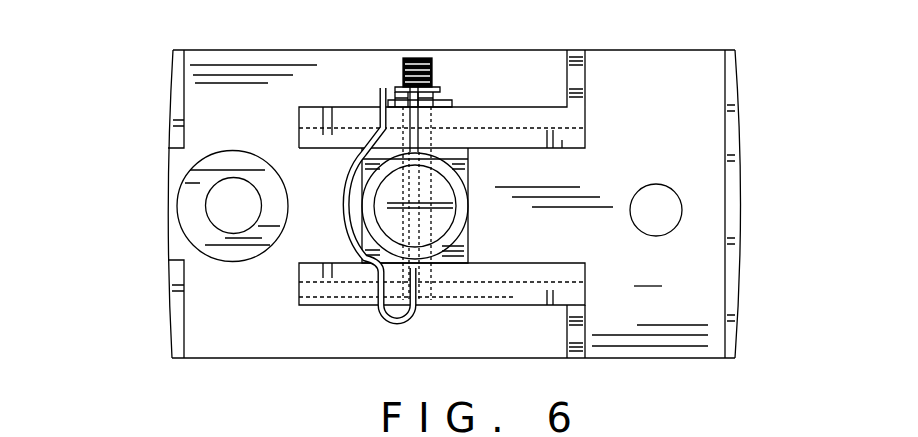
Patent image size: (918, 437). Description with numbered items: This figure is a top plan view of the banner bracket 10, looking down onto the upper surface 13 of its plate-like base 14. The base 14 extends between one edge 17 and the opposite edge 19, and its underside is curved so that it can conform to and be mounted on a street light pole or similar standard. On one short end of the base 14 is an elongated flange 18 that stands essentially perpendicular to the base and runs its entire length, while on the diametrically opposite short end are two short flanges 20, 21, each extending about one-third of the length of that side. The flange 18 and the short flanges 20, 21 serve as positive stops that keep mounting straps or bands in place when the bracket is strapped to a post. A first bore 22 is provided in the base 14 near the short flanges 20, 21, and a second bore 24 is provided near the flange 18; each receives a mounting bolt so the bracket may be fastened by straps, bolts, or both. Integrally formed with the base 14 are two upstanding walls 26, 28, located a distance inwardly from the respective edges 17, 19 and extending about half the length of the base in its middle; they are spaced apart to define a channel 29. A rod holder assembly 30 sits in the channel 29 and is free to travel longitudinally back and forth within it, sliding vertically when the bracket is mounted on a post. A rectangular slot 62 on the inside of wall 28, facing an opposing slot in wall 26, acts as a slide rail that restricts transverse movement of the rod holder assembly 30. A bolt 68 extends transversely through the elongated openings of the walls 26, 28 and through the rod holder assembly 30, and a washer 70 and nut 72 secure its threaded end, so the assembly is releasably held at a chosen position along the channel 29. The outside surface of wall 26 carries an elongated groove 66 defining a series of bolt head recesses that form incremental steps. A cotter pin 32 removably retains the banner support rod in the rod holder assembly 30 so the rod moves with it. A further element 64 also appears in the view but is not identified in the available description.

The banner bracket 10 is at (118, 150).
The upper surface 13 is at (648, 275).
The base 14 is at (471, 208).
The edge 17 is at (323, 360).
The elongated flange 18 is at (732, 257).
The edge 19 is at (325, 50).
The short flange 20 is at (176, 306).
The short flange 21 is at (177, 108).
The first bore 22 is at (222, 203).
The second bore 24 is at (657, 213).
The upstanding wall 26 is at (533, 297).
The upstanding wall 28 is at (518, 115).
The channel 29 is at (600, 185).
The rod holder assembly 30 is at (462, 178).
The cotter pin 32 is at (337, 232).
The rectangular slot 62 is at (563, 150).
The lower plate 64 is at (503, 273).
The elongated groove 66 is at (477, 305).
The bolt 68 is at (417, 58).
The washer 70 is at (452, 101).
The nut 72 is at (433, 90).